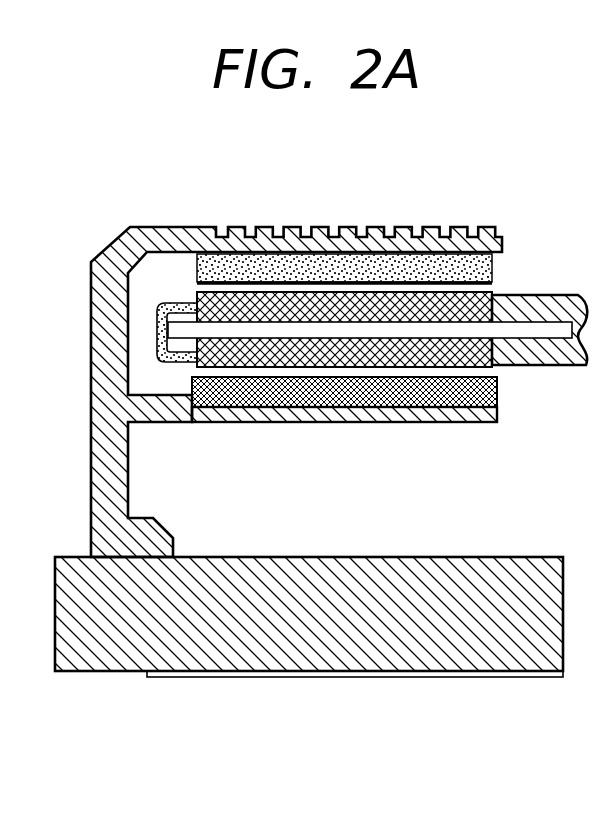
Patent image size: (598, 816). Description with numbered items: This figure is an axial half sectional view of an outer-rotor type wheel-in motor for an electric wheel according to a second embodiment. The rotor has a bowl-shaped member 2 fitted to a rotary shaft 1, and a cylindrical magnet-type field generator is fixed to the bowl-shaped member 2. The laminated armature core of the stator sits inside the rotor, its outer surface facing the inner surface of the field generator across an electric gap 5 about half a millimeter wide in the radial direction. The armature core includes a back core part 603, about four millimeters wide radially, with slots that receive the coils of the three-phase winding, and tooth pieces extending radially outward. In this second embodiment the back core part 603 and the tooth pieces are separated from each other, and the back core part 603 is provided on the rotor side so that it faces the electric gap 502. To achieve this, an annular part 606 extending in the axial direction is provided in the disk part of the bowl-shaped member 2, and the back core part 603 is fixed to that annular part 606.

The rotary shaft 1 is at (132, 648).
The bowl-shaped member 2 is at (156, 227).
The electric gap 5 is at (413, 287).
The electric gap 502 is at (452, 352).
The back core part 603 is at (277, 422).
The annular part 606 is at (410, 421).